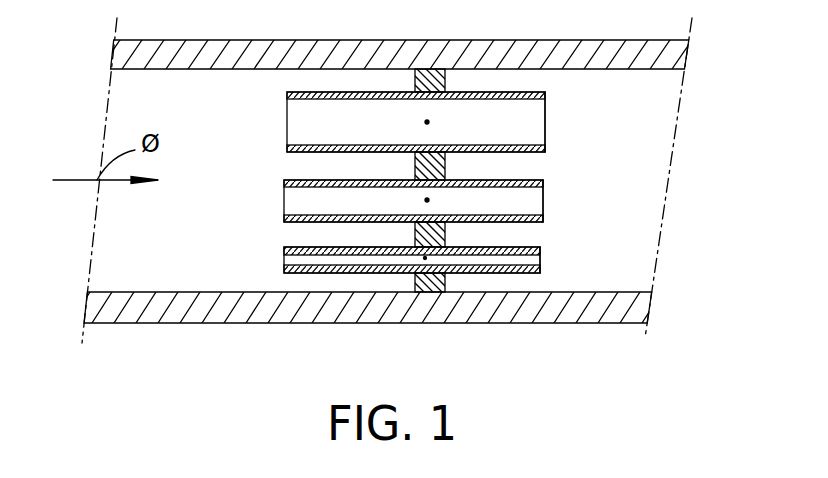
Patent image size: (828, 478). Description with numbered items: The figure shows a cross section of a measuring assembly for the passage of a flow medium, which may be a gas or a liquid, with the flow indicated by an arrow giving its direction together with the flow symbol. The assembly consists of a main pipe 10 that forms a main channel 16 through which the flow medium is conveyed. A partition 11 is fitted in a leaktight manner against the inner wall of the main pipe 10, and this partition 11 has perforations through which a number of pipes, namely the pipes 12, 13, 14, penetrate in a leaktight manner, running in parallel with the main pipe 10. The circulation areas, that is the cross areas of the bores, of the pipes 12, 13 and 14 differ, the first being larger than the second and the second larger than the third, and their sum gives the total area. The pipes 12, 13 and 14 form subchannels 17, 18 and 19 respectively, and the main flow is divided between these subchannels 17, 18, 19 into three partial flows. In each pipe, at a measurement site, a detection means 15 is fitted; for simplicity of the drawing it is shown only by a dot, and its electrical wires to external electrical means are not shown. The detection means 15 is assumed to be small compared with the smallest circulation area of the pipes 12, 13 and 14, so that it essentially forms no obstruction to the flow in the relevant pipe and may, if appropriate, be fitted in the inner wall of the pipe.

The main pipe 10 is at (590, 40).
The partition 11 is at (445, 80).
The pipe 12 is at (287, 98).
The pipe 13 is at (284, 183).
The pipe 14 is at (284, 250).
The detection means 15 is at (427, 122).
The main channel 16 is at (666, 88).
The subchannel 17 is at (538, 125).
The subchannel 18 is at (540, 202).
The subchannel 19 is at (542, 262).